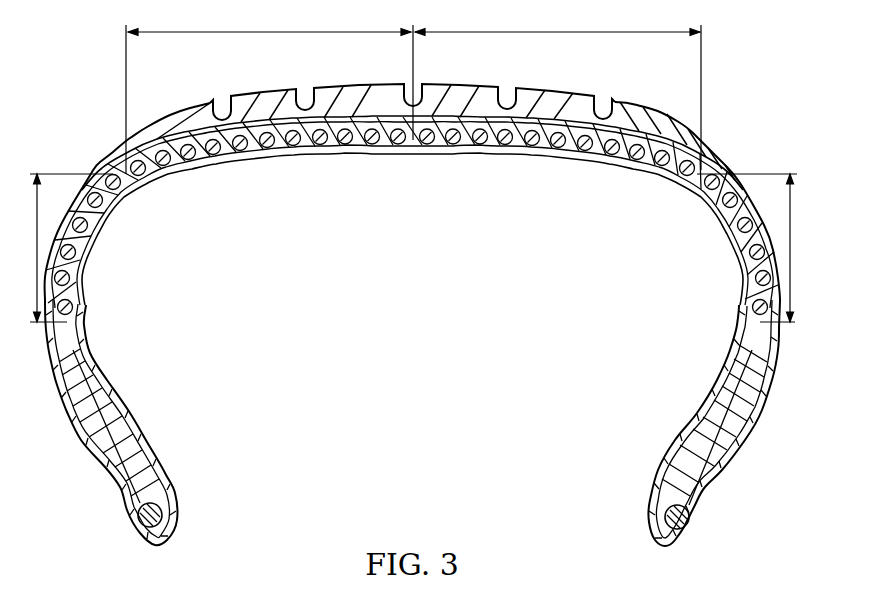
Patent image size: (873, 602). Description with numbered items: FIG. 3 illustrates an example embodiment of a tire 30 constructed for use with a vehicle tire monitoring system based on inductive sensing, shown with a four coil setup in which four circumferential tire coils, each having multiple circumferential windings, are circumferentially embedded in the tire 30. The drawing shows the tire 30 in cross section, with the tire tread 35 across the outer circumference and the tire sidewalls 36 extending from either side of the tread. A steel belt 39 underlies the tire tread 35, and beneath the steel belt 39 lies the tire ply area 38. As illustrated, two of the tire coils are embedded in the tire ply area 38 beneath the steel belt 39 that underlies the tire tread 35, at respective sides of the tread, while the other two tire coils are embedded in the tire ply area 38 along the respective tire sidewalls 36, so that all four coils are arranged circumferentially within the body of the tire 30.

The tire 30 is at (732, 81).
The tire tread 35 is at (350, 97).
The tire sidewalls 36 is at (763, 223).
The tire ply area 38 is at (153, 153).
The steel belt 39 is at (543, 127).